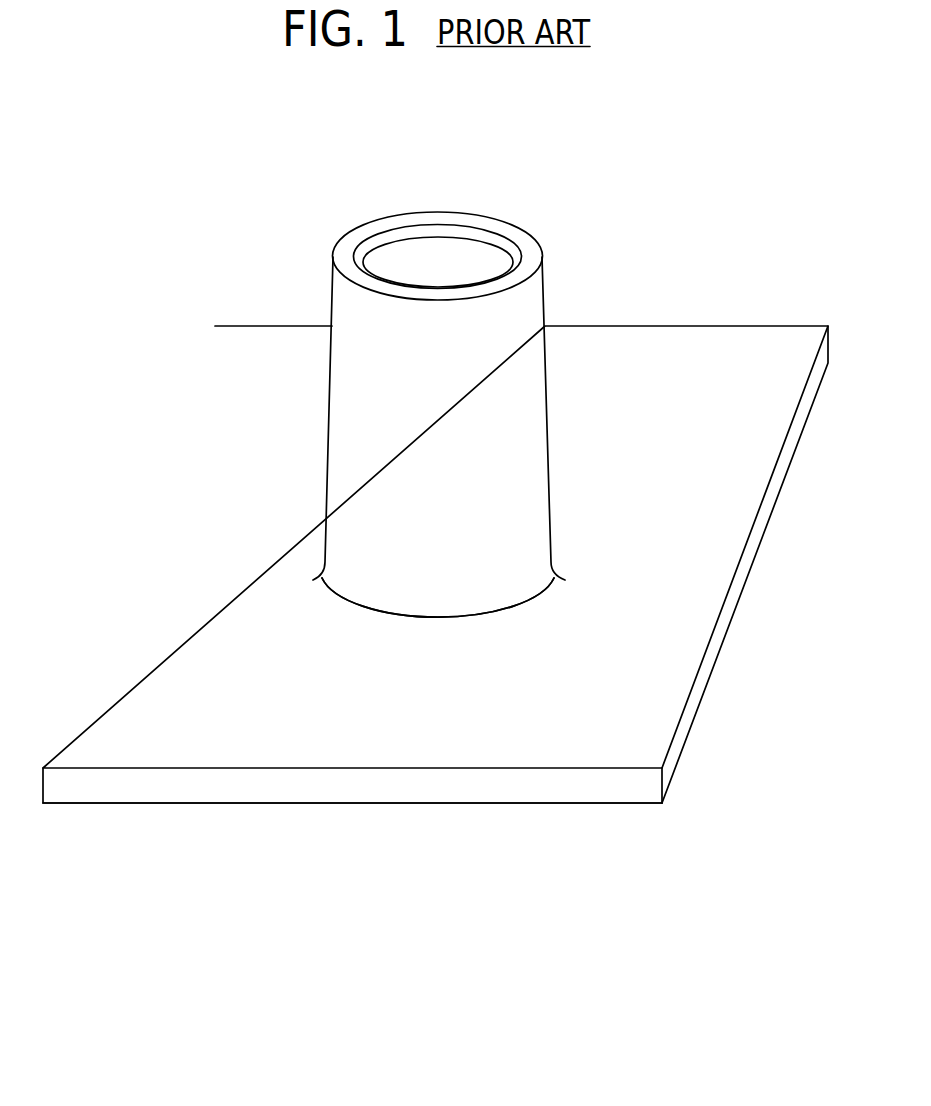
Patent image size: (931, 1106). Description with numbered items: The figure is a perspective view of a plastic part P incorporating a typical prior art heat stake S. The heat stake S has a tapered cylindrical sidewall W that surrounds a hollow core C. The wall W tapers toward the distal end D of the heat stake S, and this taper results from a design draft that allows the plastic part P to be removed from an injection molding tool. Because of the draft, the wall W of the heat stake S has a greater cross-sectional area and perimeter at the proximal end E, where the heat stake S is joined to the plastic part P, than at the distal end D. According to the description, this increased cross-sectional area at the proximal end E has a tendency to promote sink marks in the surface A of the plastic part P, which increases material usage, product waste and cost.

The heat stake S is at (465, 382).
The tapered cylindrical sidewall W is at (402, 432).
The hollow core C is at (450, 265).
The distal end D is at (540, 252).
The proximal end E is at (508, 600).
The plastic part P is at (730, 343).
The surface A is at (527, 803).